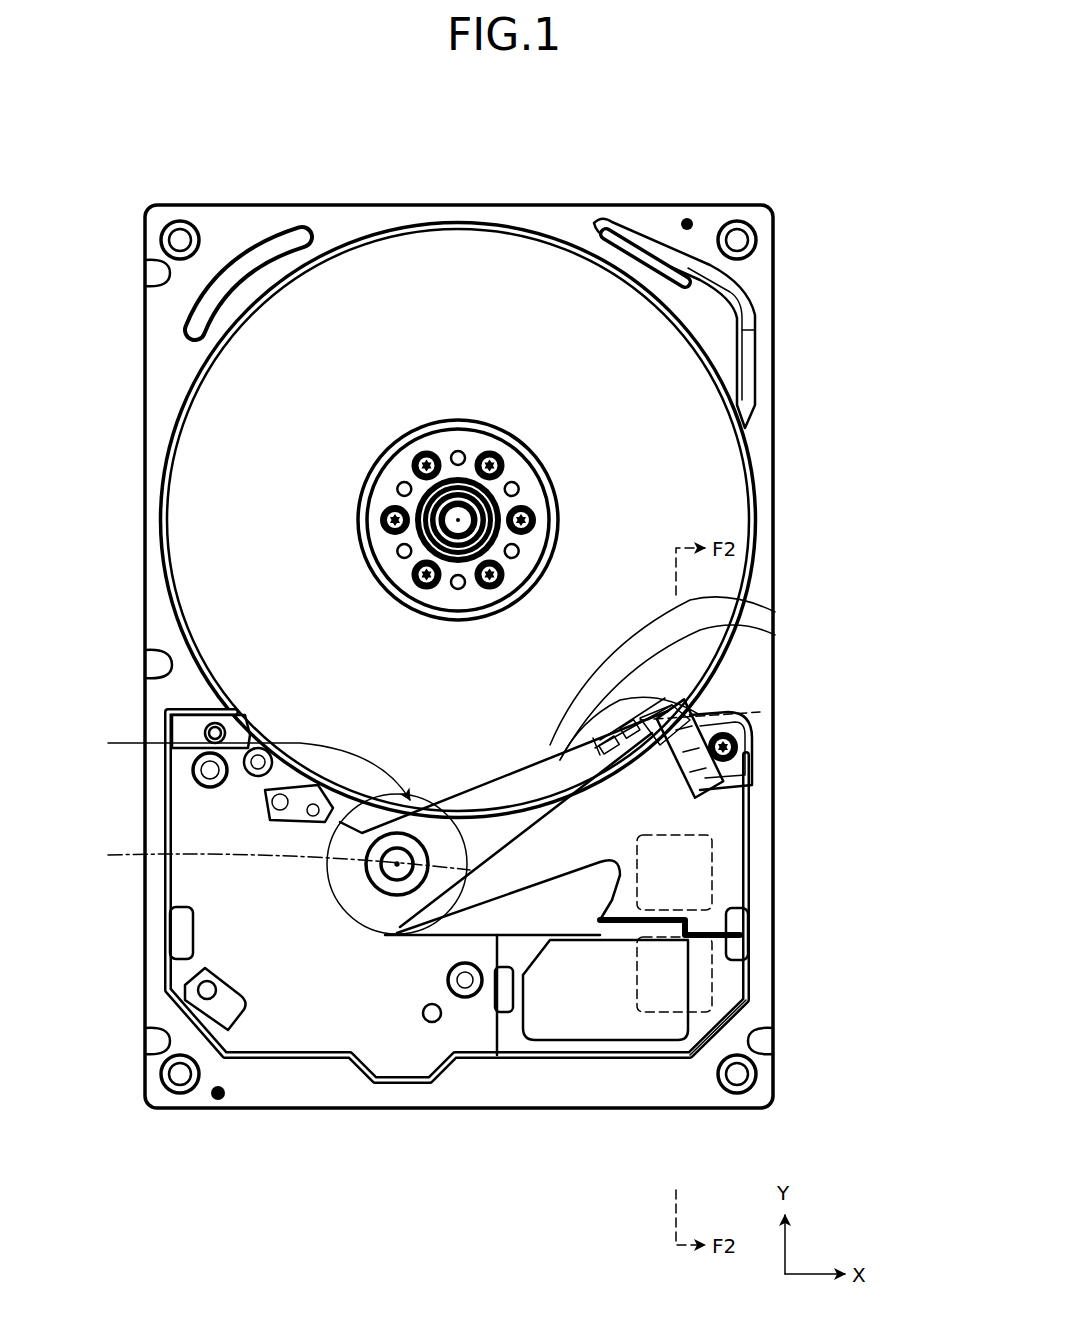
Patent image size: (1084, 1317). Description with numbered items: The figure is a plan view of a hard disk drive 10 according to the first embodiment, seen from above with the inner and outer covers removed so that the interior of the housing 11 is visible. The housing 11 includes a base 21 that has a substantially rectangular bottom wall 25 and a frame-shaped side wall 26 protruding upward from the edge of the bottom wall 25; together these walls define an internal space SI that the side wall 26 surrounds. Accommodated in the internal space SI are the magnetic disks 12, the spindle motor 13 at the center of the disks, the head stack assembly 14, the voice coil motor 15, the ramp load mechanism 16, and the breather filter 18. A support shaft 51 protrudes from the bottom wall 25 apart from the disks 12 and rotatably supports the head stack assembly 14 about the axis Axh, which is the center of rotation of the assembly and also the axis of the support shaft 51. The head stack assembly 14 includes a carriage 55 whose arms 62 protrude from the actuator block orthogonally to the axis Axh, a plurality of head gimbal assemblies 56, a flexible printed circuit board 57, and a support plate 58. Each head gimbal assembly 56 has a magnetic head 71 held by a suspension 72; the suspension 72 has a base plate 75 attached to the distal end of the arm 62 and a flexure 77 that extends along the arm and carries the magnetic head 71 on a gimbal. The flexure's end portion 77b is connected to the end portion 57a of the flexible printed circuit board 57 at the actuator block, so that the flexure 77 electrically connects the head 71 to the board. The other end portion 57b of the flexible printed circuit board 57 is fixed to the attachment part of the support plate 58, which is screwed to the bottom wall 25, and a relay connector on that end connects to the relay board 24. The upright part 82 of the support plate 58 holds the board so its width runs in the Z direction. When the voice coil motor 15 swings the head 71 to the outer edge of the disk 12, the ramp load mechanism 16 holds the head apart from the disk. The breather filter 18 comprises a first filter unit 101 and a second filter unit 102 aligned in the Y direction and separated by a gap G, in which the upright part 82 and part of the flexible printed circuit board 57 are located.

The hard disk drive 10 is at (152, 130).
The housing 11 is at (768, 196).
The base 21 is at (775, 243).
The magnetic disk 12 is at (715, 505).
The spindle motor 13 is at (508, 470).
The head stack assembly 14 is at (375, 772).
The voice coil motor 15 is at (298, 1005).
The ramp load mechanism 16 is at (740, 745).
The breather filter 18 is at (758, 1037).
The relay board 24 is at (620, 1010).
The bottom wall 25 is at (515, 1000).
The side wall 26 is at (760, 628).
The support shaft 51 is at (385, 920).
The carriage 55 is at (358, 835).
The head gimbal assembly 56 is at (640, 700).
The flexible printed circuit board 57 is at (445, 900).
The end portion of the FPC 57a is at (430, 900).
The end portion of the FPC 57b is at (742, 997).
The support plate 58 is at (660, 1020).
The arm 62 is at (648, 700).
The suspension 72 is at (628, 735).
The base plate 75 is at (700, 790).
The flexure 77 is at (660, 725).
The end portion of the flexure 77b is at (400, 1100).
The magnetic head 71 is at (760, 718).
The upright part 82 is at (738, 935).
The first filter unit 101 is at (712, 848).
The second filter unit 102 is at (712, 1043).
The axis Axh is at (268, 856).
The internal space SI is at (735, 815).
The gap G is at (710, 917).